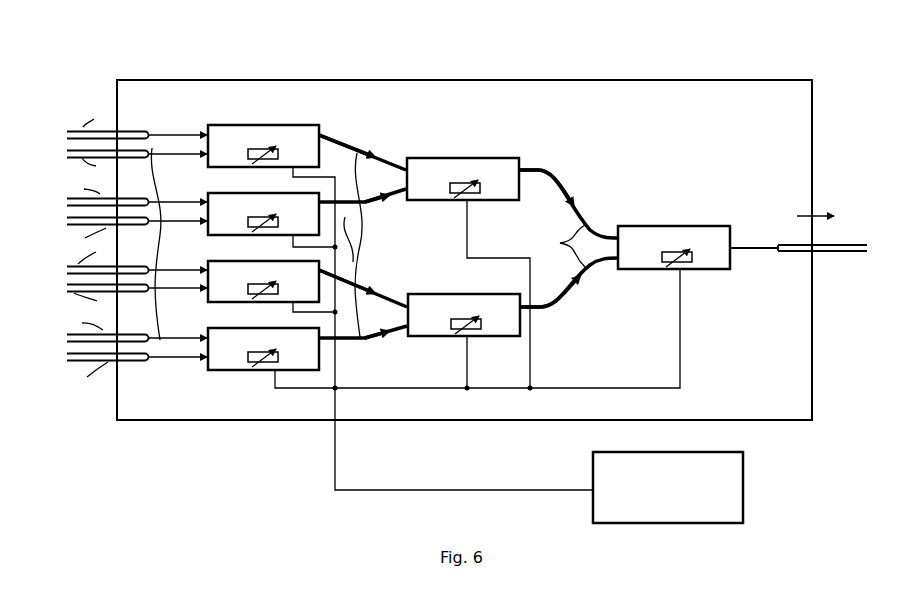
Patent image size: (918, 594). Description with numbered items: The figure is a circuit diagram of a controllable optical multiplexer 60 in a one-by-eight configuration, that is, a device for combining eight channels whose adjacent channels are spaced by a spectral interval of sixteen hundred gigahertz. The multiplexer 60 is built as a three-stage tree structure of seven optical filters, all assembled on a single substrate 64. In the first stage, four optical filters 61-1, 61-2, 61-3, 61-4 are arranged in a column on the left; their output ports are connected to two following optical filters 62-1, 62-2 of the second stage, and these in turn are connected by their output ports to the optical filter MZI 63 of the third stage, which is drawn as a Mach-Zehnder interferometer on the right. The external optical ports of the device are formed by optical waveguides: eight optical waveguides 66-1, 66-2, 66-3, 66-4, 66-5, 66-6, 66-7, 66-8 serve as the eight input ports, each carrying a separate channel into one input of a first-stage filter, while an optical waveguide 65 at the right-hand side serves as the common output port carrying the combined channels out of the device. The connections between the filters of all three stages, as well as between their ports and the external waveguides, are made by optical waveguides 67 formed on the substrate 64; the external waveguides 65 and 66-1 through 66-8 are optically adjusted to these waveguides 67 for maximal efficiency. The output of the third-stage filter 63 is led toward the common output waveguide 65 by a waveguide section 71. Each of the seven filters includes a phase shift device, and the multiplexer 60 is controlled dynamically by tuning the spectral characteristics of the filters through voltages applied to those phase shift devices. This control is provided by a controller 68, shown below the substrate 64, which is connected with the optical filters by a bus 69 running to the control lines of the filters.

The controllable optical multiplexer 60 is at (180, 64).
The optical filter of the first stage 61-1 is at (268, 124).
The optical filter of the first stage 61-2 is at (268, 192).
The optical filter of the first stage 61-3 is at (276, 260).
The optical filter of the first stage 61-4 is at (272, 327).
The optical filter of the second stage 62-1 is at (480, 157).
The optical filter of the second stage 62-2 is at (488, 293).
The optical filter MZI of the third stage 63 is at (702, 225).
The substrate 64 is at (758, 113).
The optical waveguide 65 is at (825, 252).
The optical waveguide 66-1 is at (112, 124).
The optical waveguide 66-2 is at (112, 166).
The optical waveguide 66-3 is at (112, 196).
The optical waveguide 66-4 is at (112, 235).
The optical waveguide 66-5 is at (112, 259).
The optical waveguide 66-6 is at (112, 299).
The optical waveguide 66-7 is at (112, 329).
The optical waveguide 66-8 is at (112, 372).
The optical waveguides 67 is at (376, 237).
The controller 68 is at (668, 487).
The bus 69 is at (360, 388).
The output waveguide 71 is at (765, 246).